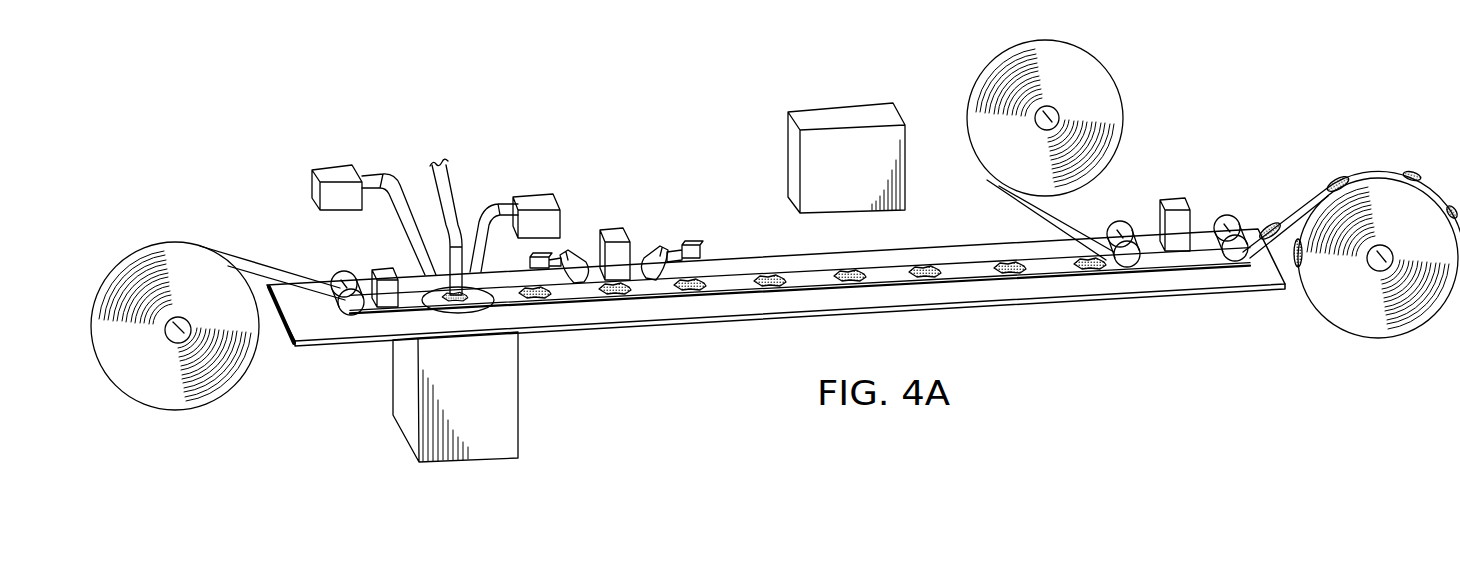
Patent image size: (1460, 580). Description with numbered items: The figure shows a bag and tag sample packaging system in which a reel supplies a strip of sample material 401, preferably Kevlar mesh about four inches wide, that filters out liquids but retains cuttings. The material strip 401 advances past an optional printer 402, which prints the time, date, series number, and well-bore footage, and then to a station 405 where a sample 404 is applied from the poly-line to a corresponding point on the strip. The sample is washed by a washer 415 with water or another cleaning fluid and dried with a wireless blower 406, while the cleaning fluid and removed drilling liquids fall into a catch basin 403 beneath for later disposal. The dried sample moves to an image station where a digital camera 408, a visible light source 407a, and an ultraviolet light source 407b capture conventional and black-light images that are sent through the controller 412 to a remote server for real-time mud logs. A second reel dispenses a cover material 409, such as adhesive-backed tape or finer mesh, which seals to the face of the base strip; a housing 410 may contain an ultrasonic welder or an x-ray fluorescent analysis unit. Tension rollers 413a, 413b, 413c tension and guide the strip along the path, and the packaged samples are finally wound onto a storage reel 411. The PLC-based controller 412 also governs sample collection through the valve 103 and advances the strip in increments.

The valve 103 is at (453, 190).
The strip of sample material 401 is at (162, 240).
The printer 402 is at (378, 270).
The catch basin 403 is at (518, 392).
The sample 404 is at (478, 293).
The station 405 is at (432, 321).
The wireless blower 406 is at (532, 197).
The visible light source 407a is at (543, 268).
The ultraviolet light source 407b is at (687, 243).
The digital camera 408 is at (618, 230).
The cover material 409 is at (1126, 108).
The housing 410 is at (1173, 197).
The reel 411 is at (1382, 166).
The controller 412 is at (788, 155).
The tension roller 413a is at (335, 272).
The tension roller 413b is at (1115, 223).
The tension roller 413c is at (1226, 216).
The washer 415 is at (335, 167).